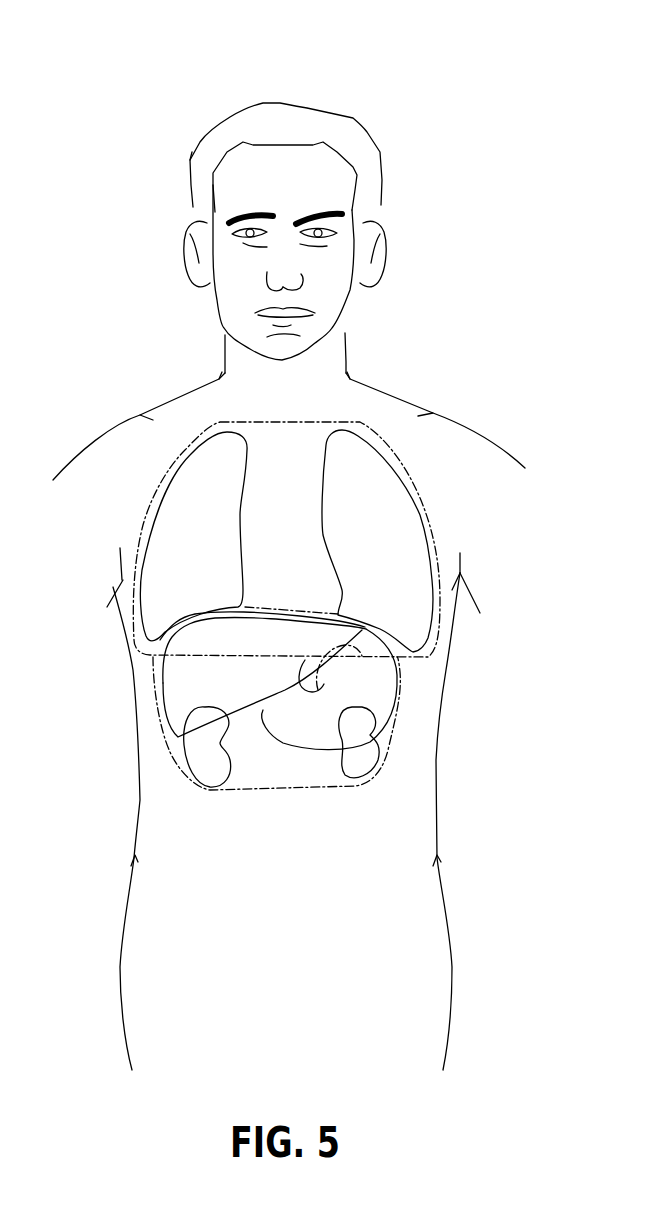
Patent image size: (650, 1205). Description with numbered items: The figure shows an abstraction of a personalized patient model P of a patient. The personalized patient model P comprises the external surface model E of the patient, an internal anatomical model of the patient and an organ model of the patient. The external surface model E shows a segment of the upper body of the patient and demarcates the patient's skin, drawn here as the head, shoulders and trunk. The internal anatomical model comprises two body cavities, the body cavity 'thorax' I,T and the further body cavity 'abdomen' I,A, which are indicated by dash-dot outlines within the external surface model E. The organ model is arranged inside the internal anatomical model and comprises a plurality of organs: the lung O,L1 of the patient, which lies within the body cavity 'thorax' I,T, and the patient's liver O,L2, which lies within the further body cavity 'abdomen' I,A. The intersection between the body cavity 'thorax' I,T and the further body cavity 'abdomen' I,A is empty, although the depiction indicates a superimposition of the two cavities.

The personalized patient model P is at (113, 58).
The external surface model E is at (382, 158).
The organ model, lung O,L1 is at (147, 522).
The internal anatomical model, body cavity 'thorax' I,T is at (430, 517).
The organ model, liver O,L2 is at (173, 692).
The internal anatomical model, further body cavity 'abdomen' I,A is at (407, 688).